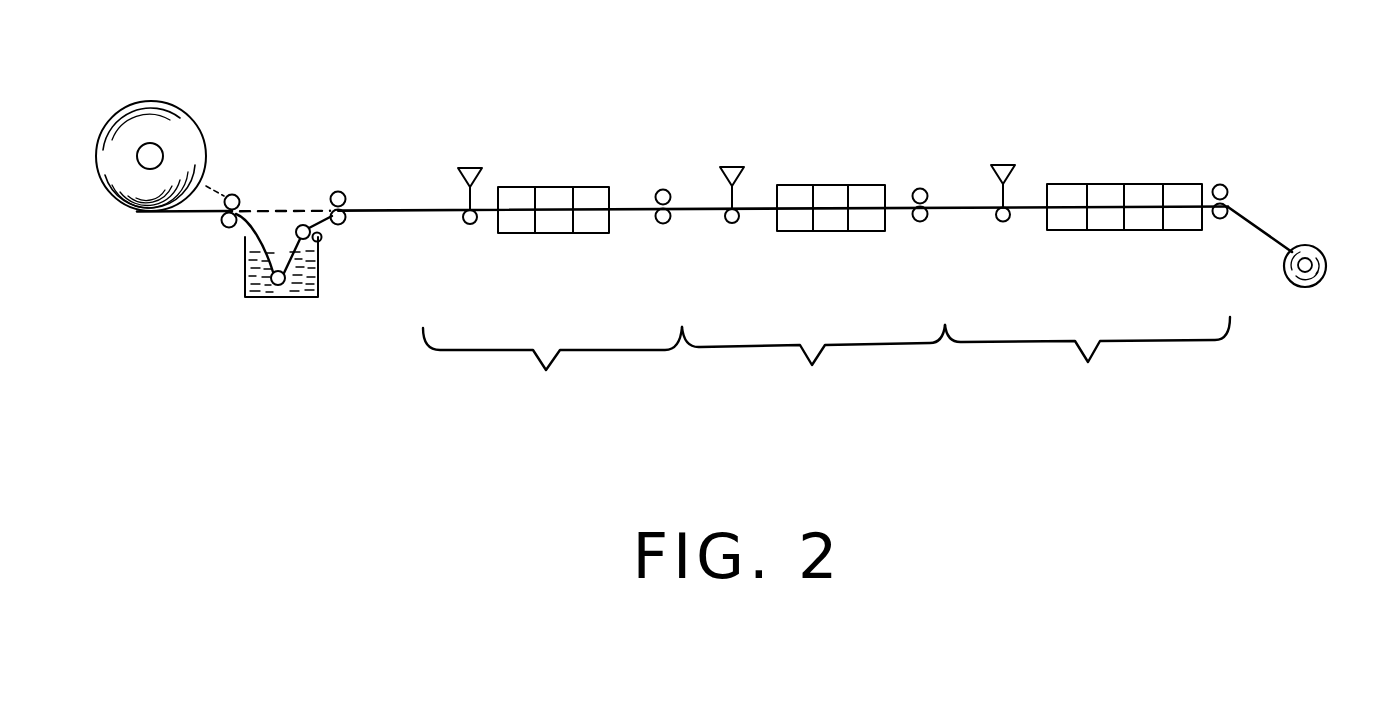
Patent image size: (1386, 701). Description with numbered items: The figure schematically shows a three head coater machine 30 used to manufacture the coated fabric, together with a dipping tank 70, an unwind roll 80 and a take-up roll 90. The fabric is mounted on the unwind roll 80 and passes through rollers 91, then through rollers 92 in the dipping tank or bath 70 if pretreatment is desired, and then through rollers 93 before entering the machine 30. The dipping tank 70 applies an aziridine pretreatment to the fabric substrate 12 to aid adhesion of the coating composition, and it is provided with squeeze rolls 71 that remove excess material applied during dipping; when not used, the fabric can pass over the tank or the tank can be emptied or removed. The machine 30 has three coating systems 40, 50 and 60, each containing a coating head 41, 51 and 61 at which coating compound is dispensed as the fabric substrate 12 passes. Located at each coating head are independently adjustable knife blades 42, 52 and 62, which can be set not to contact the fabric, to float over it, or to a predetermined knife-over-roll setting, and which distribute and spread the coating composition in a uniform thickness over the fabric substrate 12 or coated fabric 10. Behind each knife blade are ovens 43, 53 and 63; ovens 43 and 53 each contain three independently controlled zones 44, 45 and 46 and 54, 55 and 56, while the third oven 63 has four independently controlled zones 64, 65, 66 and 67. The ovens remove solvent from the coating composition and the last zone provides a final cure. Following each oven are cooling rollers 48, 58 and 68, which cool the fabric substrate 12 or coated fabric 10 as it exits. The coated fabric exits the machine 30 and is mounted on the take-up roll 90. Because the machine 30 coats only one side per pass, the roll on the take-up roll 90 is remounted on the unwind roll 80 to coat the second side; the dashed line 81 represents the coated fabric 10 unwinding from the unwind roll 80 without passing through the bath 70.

The coated fabric 10 is at (1288, 246).
The fabric substrate 12 is at (137, 213).
The three head coater machine 30 is at (818, 66).
The coating system 40 is at (507, 124).
The coating head 41 is at (464, 165).
The knife blade 42 is at (478, 193).
The oven 43 is at (563, 160).
The independently controlled zone 44 is at (505, 228).
The independently controlled zone 45 is at (556, 228).
The independently controlled zone 46 is at (592, 224).
The cooling rollers 48 is at (663, 189).
The coating system 50 is at (724, 124).
The coating head 51 is at (726, 164).
The knife blade 52 is at (740, 192).
The oven 53 is at (838, 160).
The independently controlled zone 54 is at (786, 227).
The independently controlled zone 55 is at (830, 226).
The independently controlled zone 56 is at (875, 224).
The cooling rollers 58 is at (920, 188).
The coating system 60 is at (979, 122).
The coating head 61 is at (996, 163).
The knife blade 62 is at (1010, 190).
The third oven 63 is at (1125, 160).
The independently controlled zone 64 is at (1058, 226).
The independently controlled zone 65 is at (1107, 226).
The independently controlled zone 66 is at (1147, 224).
The independently controlled zone 67 is at (1182, 224).
The cooling rollers 68 is at (1220, 184).
The dipping tank 70 is at (282, 300).
The squeeze rolls 71 is at (321, 239).
The unwind roll 80 is at (152, 158).
The dashed line 81 is at (207, 184).
The take-up roll 90 is at (1310, 268).
The rollers 91 is at (223, 228).
The rollers 92 is at (318, 276).
The rollers 93 is at (338, 191).